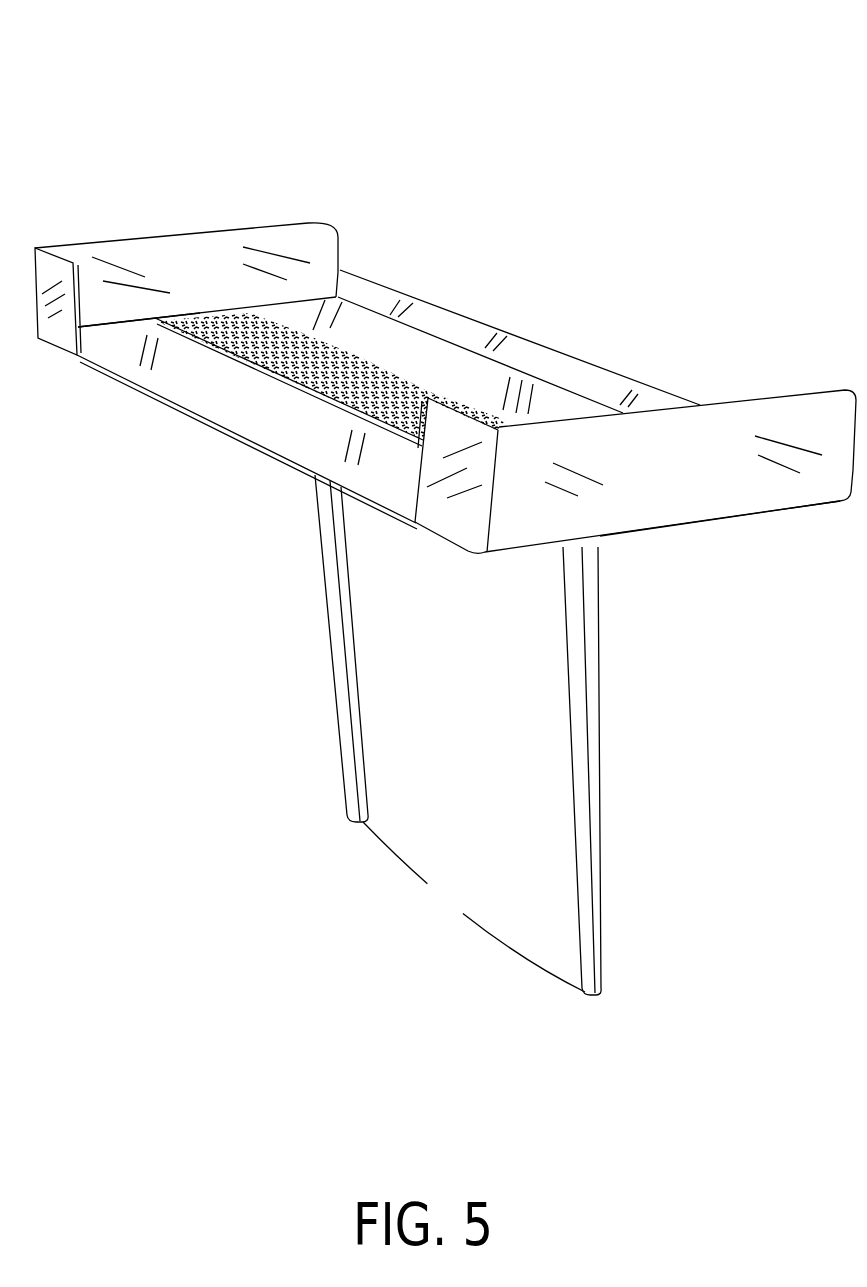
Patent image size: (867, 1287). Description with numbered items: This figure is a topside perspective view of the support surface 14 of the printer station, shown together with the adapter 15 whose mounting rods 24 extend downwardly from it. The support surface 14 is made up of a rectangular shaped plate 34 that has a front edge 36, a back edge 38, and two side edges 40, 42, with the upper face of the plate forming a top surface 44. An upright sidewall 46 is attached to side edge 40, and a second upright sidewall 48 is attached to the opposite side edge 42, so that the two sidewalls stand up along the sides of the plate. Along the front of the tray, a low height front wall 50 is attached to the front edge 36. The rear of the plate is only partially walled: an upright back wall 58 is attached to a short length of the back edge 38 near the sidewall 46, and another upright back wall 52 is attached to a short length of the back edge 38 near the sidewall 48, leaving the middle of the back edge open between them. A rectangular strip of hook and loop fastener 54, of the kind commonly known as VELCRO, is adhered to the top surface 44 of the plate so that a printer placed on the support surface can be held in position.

The support surface 14 is at (616, 128).
The adapter 15 is at (543, 772).
The mounting rods 24 is at (458, 735).
The rectangular shaped plate 34 is at (375, 335).
The front edge 36 is at (590, 397).
The back edge 38 is at (203, 422).
The side edge 40 is at (707, 525).
The side edge 42 is at (117, 320).
The top surface 44 is at (246, 419).
The upright sidewall 46 is at (652, 484).
The upright sidewall 48 is at (189, 283).
The low height front wall 50 is at (458, 332).
The upright back wall 52 is at (55, 325).
The hook and loop fastener 54 is at (290, 332).
The upright back wall 58 is at (458, 507).